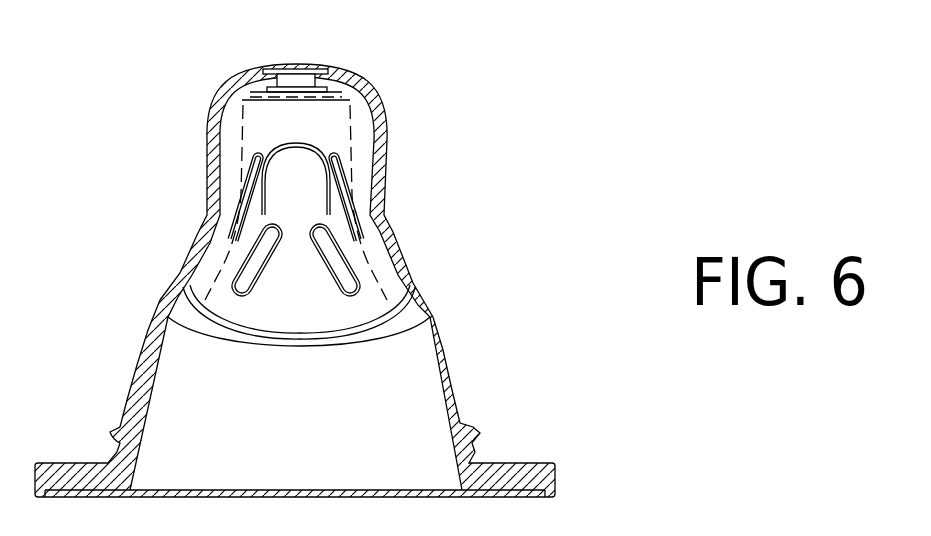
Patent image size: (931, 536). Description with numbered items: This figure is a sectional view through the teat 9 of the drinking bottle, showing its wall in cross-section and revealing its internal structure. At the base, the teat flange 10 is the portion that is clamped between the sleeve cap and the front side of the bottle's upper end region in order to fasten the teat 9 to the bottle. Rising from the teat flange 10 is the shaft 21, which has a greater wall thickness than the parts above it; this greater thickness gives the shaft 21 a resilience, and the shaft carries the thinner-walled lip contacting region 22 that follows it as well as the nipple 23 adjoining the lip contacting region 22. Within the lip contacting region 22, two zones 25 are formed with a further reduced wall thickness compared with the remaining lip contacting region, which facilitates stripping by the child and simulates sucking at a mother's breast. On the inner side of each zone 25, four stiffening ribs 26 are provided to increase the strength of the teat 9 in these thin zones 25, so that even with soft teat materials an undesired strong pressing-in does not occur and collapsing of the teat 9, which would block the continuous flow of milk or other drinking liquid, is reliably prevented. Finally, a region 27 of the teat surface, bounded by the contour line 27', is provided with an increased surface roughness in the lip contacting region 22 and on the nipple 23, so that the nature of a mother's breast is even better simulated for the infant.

The teat 9 is at (160, 219).
The teat flange 10 is at (540, 465).
The shaft 21 is at (460, 371).
The lip contacting region 22 is at (392, 270).
The nipple 23 is at (367, 97).
The zones 25 is at (300, 250).
The stiffening ribs 26 is at (338, 176).
The region 27 is at (291, 186).
The contour line 27' is at (185, 196).